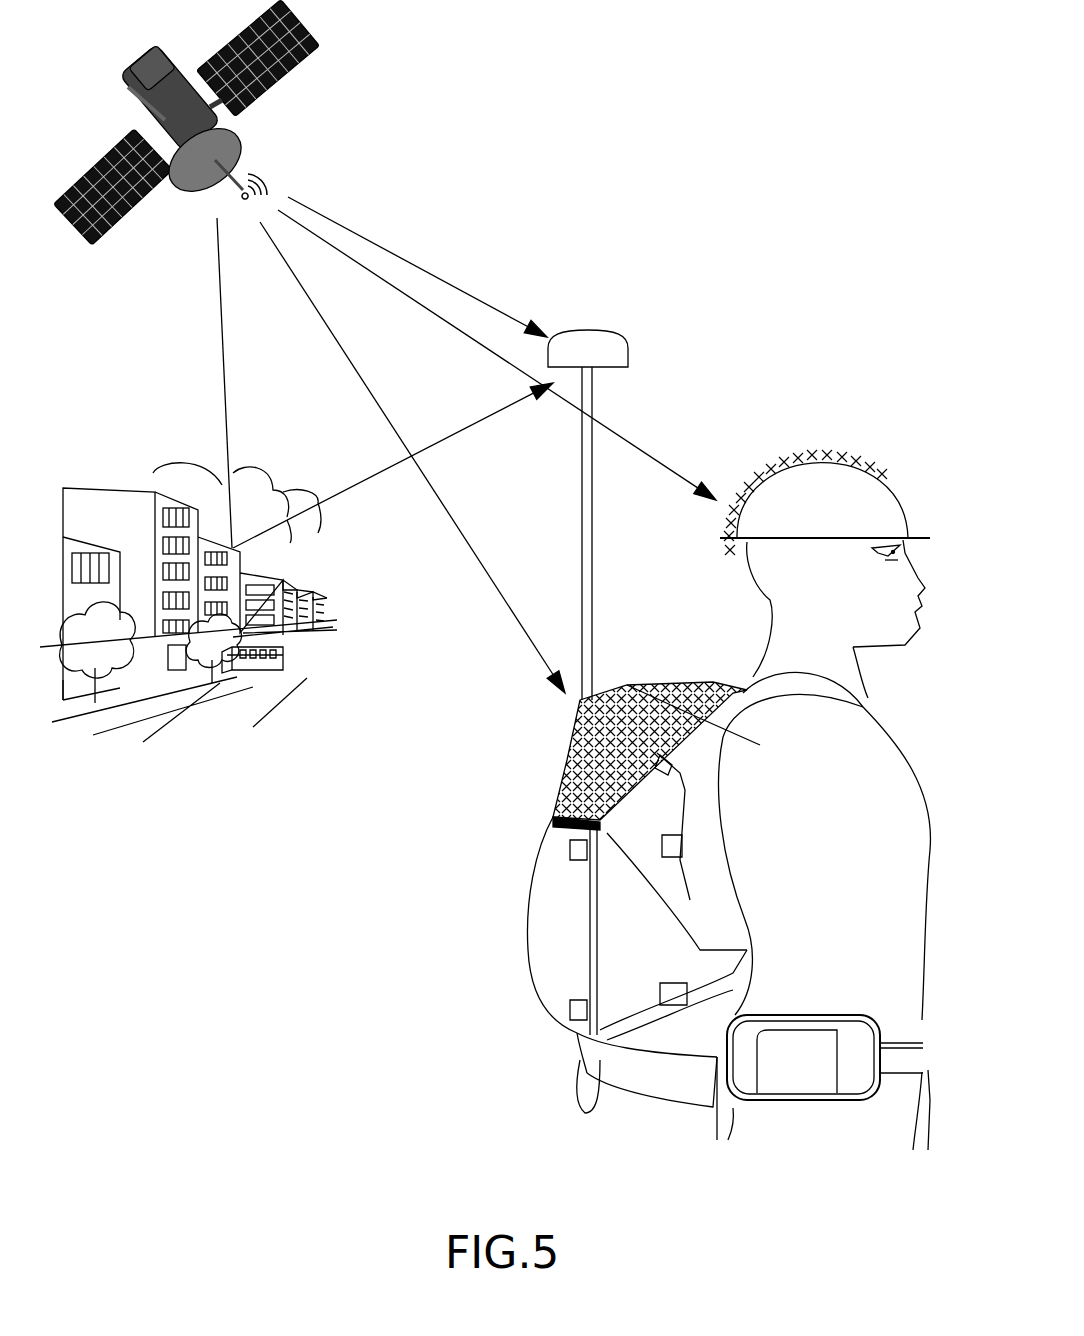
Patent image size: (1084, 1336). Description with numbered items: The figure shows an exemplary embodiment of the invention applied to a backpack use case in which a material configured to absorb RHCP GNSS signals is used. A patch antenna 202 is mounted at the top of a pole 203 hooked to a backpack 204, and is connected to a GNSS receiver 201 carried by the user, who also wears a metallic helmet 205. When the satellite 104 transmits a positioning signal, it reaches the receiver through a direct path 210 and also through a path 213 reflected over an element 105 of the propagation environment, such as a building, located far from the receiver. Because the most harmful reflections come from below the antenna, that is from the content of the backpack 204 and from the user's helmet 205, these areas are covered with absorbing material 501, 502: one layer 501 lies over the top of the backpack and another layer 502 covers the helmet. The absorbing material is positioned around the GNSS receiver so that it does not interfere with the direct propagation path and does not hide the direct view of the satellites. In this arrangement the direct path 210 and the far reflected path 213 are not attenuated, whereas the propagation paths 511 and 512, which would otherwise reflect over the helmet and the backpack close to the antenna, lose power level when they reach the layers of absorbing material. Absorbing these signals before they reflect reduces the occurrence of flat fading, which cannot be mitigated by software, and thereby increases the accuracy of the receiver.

The satellite 104 is at (323, 28).
The element of the propagation environment 105 is at (77, 490).
The GNSS receiver 201 is at (787, 1073).
The antenna 202 is at (597, 333).
The pole 203 is at (580, 530).
The backpack 204 is at (527, 893).
The metallic helmet 205 is at (903, 505).
The direct path 210 is at (380, 247).
The reflected path 213 is at (223, 352).
The absorbing material 501 is at (580, 762).
The absorbing material 502 is at (793, 450).
The propagation path 511 is at (650, 453).
The propagation path 512 is at (312, 292).